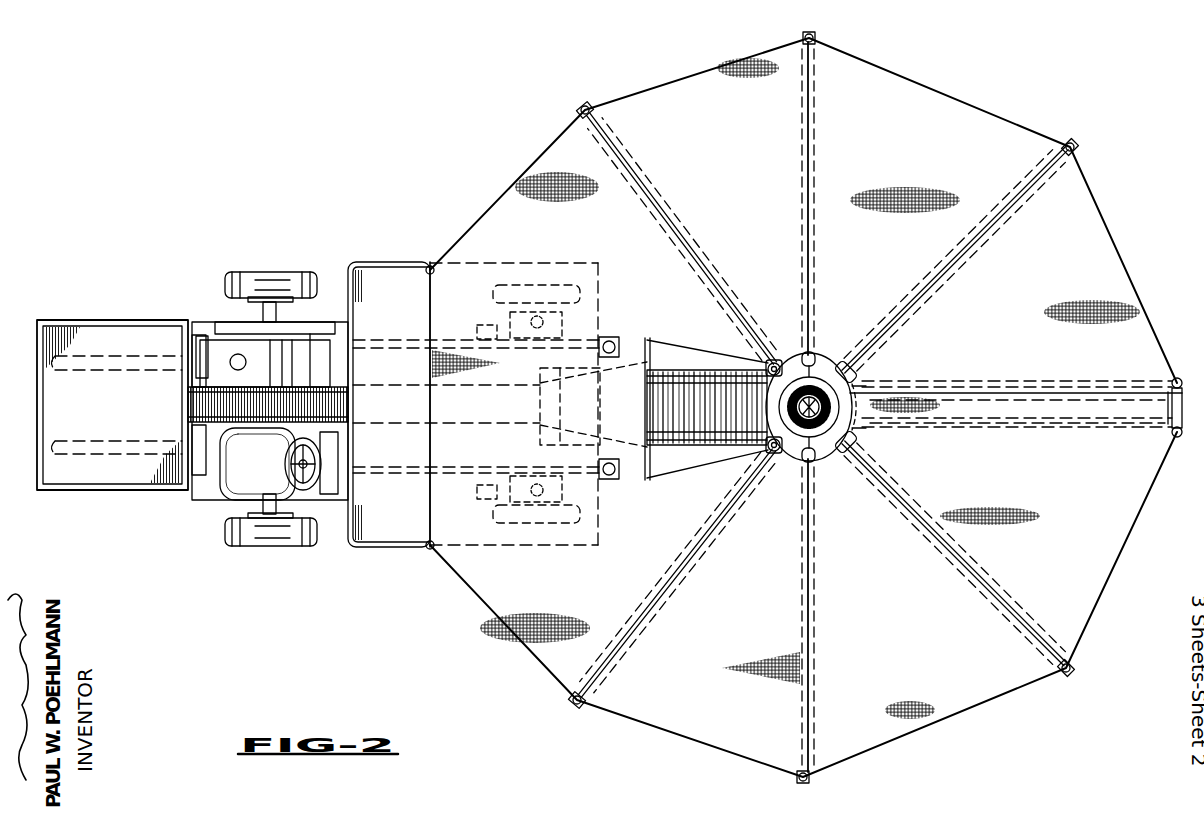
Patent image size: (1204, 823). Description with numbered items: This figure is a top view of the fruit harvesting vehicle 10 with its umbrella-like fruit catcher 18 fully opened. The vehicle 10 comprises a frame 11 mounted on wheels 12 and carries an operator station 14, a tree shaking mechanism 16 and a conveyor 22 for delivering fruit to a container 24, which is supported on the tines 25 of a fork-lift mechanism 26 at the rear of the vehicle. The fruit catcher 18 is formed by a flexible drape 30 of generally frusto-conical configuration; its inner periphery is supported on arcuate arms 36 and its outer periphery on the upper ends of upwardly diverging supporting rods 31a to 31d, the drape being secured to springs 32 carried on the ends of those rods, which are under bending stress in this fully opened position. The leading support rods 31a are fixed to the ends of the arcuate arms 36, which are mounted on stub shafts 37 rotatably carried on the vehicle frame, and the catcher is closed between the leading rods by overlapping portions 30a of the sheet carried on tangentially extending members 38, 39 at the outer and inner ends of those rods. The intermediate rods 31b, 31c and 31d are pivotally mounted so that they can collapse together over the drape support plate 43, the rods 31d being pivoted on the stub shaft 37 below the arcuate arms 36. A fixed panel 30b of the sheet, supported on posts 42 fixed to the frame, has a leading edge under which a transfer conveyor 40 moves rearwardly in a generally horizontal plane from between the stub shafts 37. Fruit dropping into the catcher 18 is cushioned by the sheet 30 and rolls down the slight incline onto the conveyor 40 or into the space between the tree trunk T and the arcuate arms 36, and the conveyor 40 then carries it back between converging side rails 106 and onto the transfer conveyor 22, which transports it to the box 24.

The fruit harvesting vehicle 10 is at (318, 600).
The frame 11 is at (382, 482).
The wheels 12 is at (247, 268).
The operator station 14 is at (220, 505).
The tree shaking mechanism 16 is at (838, 476).
The umbrella-like fruit catcher 18 is at (485, 666).
The conveyor 22 is at (180, 402).
The container 24 is at (70, 319).
The tines 25 is at (123, 354).
The fork-lift mechanism 26 is at (203, 331).
The flexible drape 30 is at (905, 90).
The overlapping portions 30a is at (982, 390).
The fixed panel 30b is at (429, 312).
The leading support rods 31a is at (1043, 382).
The intermediate rods 31b is at (997, 222).
The intermediate rods 31c is at (800, 140).
The intermediate rods 31d is at (574, 116).
The springs 32 is at (1068, 142).
The arcuate arms 36 is at (822, 352).
The stub shafts 37 is at (776, 362).
The tangentially extending member 38 is at (1160, 412).
The tangentially extending member 39 is at (855, 410).
The transfer conveyor 40 is at (682, 370).
The posts 42 is at (430, 265).
The drape support plate 43 is at (378, 262).
The converging side rails 106 is at (538, 405).
The tree trunk T is at (812, 401).